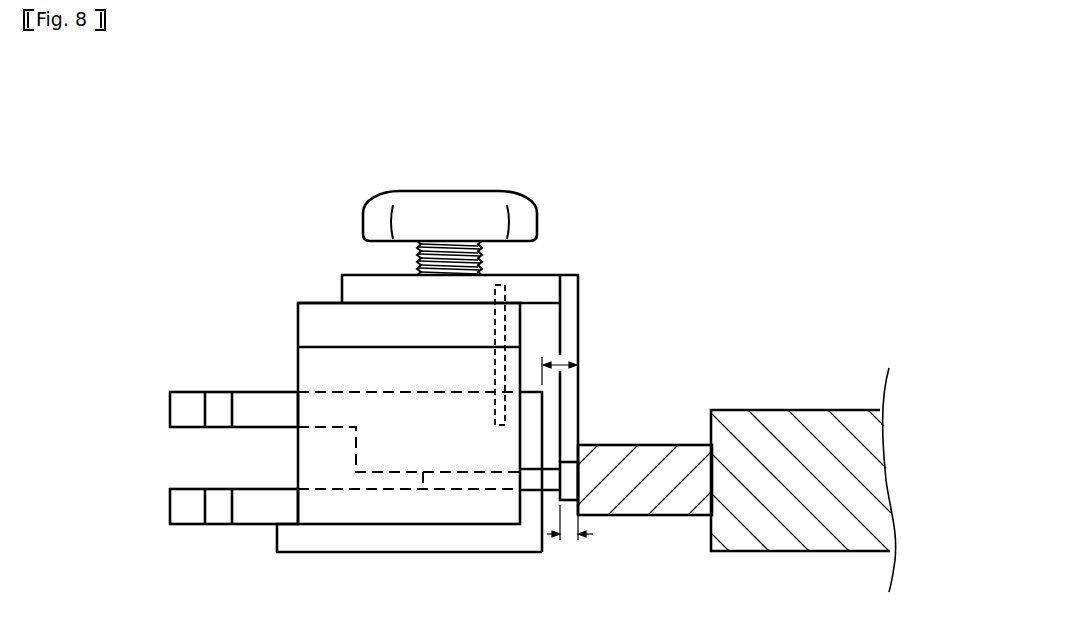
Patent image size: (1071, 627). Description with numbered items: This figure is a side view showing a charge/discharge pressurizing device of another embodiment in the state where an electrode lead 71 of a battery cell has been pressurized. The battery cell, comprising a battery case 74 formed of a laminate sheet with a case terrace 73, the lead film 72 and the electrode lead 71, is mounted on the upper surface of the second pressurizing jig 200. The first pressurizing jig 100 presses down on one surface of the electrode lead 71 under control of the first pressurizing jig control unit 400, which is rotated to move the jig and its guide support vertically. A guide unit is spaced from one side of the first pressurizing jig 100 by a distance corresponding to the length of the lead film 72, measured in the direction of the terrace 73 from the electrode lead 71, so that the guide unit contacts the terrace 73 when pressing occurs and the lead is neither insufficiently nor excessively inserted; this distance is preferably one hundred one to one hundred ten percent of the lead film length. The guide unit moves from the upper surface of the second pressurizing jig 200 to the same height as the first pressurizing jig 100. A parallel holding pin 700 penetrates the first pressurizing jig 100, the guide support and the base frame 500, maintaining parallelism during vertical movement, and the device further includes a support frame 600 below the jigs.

The first pressurizing jig 100 is at (382, 420).
The second pressurizing jig 200 is at (385, 508).
The first pressurizing jig control unit 400 is at (482, 203).
The base frame 500 is at (310, 323).
The support frame 600 is at (288, 538).
The parallel holding pin 700 is at (500, 295).
The electrode lead 71 is at (463, 483).
The lead film 72 is at (568, 488).
The terrace 73 is at (637, 507).
The battery case 74 is at (782, 542).